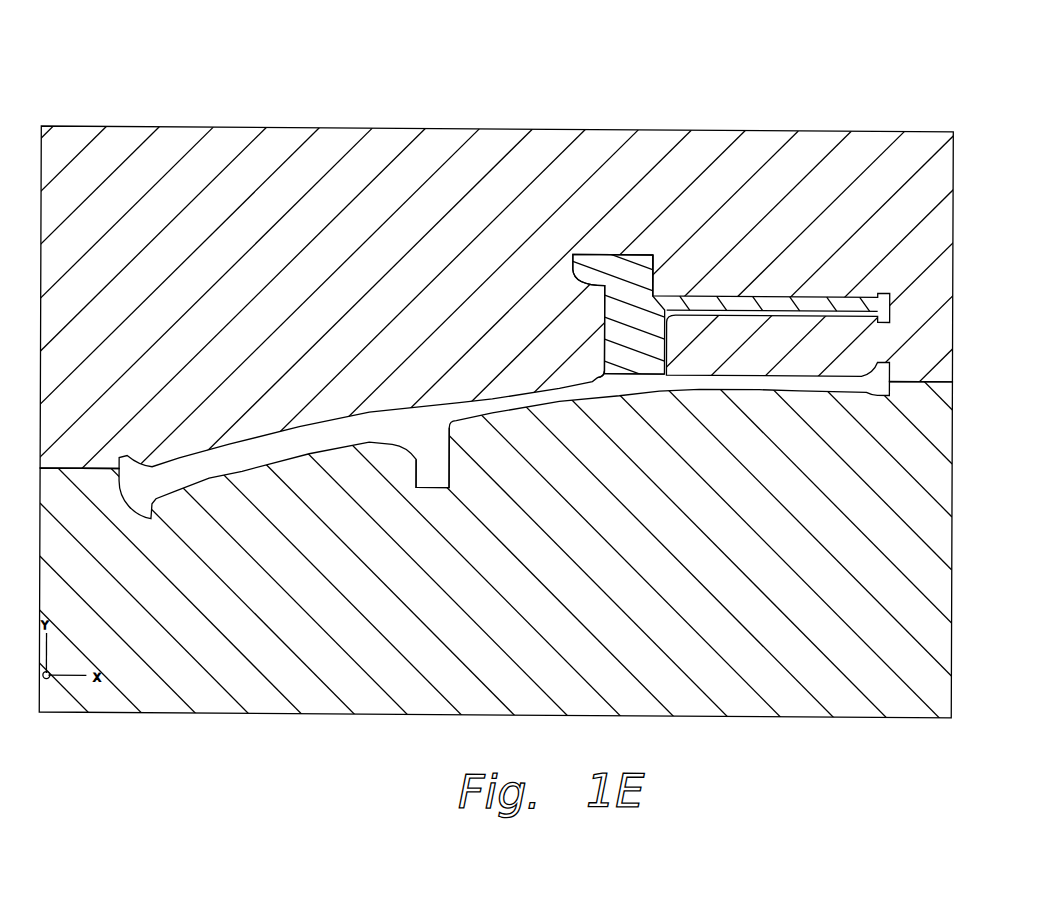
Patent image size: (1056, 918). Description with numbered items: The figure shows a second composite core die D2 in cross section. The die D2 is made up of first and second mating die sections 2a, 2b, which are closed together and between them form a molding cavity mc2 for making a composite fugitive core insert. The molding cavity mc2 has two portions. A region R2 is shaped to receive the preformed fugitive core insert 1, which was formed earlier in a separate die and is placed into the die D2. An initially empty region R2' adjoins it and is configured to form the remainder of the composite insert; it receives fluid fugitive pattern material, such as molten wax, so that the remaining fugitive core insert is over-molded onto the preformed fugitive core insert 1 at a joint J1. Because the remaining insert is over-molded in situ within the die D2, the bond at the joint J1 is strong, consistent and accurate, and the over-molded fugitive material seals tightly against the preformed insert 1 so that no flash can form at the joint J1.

The preformed fugitive core insert 1 is at (630, 295).
The region R2 is at (691, 266).
The initially empty region R2' is at (560, 422).
The joint J1 is at (618, 372).
The molding cavity mc2 is at (430, 437).
The second composite core die D2 is at (984, 333).
The first die mating die section 2a is at (162, 262).
The second die mating die section 2b is at (467, 567).